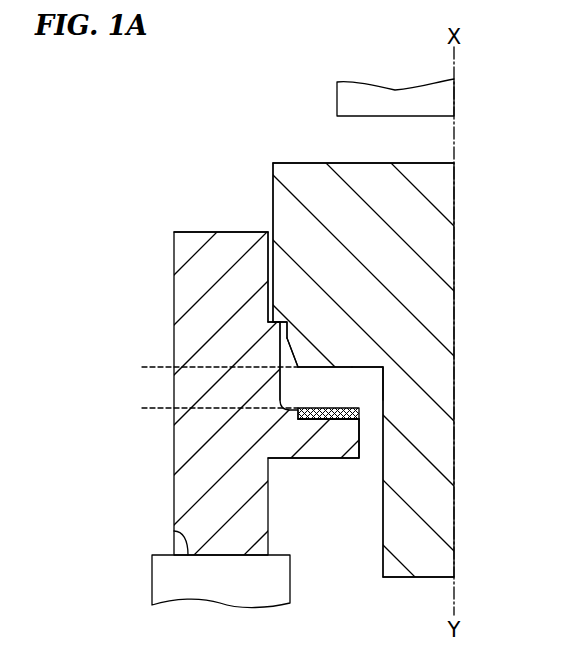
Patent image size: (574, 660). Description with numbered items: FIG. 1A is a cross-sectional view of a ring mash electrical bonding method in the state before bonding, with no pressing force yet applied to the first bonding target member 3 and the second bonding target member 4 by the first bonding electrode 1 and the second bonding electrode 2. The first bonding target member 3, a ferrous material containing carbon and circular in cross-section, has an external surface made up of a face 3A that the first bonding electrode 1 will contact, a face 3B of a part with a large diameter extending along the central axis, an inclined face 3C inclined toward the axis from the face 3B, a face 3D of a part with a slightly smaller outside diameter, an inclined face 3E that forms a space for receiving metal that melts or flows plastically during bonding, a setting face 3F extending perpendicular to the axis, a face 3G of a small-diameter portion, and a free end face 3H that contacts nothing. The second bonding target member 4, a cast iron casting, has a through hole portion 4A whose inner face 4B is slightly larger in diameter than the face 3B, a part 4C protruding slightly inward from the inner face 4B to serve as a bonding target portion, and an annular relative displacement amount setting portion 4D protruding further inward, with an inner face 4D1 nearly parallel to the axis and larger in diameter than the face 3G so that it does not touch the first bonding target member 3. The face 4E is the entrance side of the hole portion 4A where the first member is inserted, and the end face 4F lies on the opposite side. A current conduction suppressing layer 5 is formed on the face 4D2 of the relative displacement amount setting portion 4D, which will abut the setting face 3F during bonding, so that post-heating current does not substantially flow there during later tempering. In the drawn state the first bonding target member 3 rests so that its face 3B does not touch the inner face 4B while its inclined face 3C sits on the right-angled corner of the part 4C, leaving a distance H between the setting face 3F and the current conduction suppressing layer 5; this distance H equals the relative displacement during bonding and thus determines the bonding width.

The first bonding electrode 1 is at (330, 94).
The second bonding electrode 2 is at (135, 584).
The first bonding target member 3 is at (285, 148).
The face 3A is at (409, 163).
The face of a part with a large diameter 3B is at (273, 197).
The inclined face 3C is at (279, 323).
The face 3D is at (289, 336).
The inclined face 3E is at (292, 356).
The setting face 3F is at (352, 367).
The face of a small-diameter portion 3G is at (383, 503).
The free end face 3H is at (423, 578).
The second bonding target member 4 is at (163, 237).
The hole portion 4A is at (335, 518).
The inner face 4B is at (267, 264).
The part 4C is at (276, 350).
The relative displacement amount setting portion 4D is at (323, 447).
The inner face 4D1 is at (363, 433).
The face 4D2 is at (313, 420).
The face 4E is at (188, 232).
The end face 4F is at (174, 531).
The current conduction suppressing layer 5 is at (353, 385).
The distance H is at (149, 340).